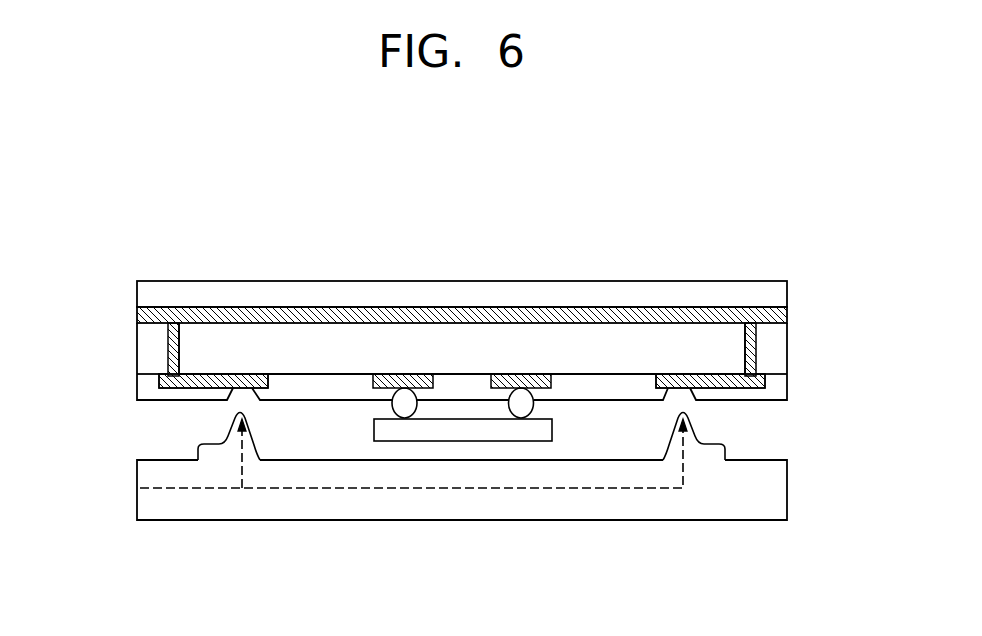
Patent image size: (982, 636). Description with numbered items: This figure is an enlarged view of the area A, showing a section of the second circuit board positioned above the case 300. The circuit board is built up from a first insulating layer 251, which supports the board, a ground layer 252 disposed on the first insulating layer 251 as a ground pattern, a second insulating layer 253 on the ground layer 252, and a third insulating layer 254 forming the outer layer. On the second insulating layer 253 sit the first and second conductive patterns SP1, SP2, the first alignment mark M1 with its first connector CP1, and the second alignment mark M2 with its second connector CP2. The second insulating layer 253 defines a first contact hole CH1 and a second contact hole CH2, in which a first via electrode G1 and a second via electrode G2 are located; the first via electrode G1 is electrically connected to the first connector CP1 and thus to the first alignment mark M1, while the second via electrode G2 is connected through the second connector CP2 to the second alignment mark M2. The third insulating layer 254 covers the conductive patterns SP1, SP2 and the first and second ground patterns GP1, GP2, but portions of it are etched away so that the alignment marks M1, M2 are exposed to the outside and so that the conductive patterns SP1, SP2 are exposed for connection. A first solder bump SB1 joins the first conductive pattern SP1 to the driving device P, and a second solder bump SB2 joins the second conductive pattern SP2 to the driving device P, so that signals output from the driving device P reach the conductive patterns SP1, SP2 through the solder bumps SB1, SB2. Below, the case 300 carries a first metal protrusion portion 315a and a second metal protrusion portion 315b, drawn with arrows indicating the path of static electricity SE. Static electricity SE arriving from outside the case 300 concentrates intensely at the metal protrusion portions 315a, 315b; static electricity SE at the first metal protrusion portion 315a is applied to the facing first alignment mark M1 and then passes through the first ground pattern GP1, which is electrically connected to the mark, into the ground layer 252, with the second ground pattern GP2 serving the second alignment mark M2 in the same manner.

The area A is at (758, 176).
The first insulating layer 251 is at (780, 295).
The ground layer 252 is at (782, 313).
The second insulating layer 253 is at (782, 340).
The third insulating layer 254 is at (782, 388).
The first via electrode G1 is at (168, 343).
The second via electrode G2 is at (757, 357).
The first contact hole CH1 is at (173, 328).
The second contact hole CH2 is at (750, 335).
The first ground pattern GP1 is at (273, 234).
The second ground pattern GP2 is at (727, 234).
The first connector CP1 is at (202, 376).
The second connector CP2 is at (716, 380).
The first alignment mark M1 is at (246, 386).
The second alignment mark M2 is at (686, 384).
The first conductive pattern SP1 is at (376, 384).
The second conductive pattern SP2 is at (553, 383).
The first solder bump SB1 is at (392, 407).
The second solder bump SB2 is at (534, 406).
The static electricity SE is at (457, 490).
The driving device P is at (493, 443).
The case 300 is at (780, 495).
The first metal protrusion portion 315a is at (199, 465).
The second metal protrusion portion 315b is at (724, 465).